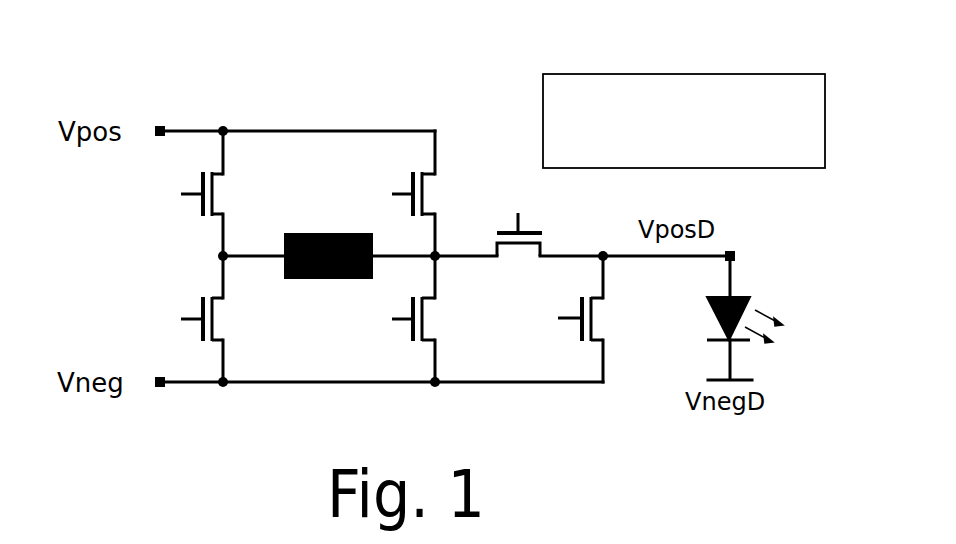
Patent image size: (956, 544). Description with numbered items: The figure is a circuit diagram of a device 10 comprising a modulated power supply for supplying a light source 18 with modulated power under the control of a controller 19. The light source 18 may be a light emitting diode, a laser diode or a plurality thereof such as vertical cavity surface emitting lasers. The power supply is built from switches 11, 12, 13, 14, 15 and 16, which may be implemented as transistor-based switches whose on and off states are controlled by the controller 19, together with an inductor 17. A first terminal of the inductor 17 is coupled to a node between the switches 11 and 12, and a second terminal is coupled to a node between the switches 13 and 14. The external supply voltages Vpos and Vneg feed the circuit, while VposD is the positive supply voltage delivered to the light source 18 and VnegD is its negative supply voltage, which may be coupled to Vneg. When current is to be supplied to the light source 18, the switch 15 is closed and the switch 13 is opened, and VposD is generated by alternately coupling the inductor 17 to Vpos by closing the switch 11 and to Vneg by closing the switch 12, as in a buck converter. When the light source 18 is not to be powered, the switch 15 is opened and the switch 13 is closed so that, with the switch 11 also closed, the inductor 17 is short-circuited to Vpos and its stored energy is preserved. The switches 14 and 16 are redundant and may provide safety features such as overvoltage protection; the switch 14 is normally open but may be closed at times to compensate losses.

The device 10 is at (208, 99).
The switch 11 is at (215, 202).
The switch 12 is at (215, 328).
The switch 13 is at (420, 197).
The switch 14 is at (426, 323).
The switch 15 is at (537, 233).
The switch 16 is at (592, 318).
The inductor 17 is at (308, 231).
The light source 18 is at (748, 295).
The controller 19 is at (675, 168).